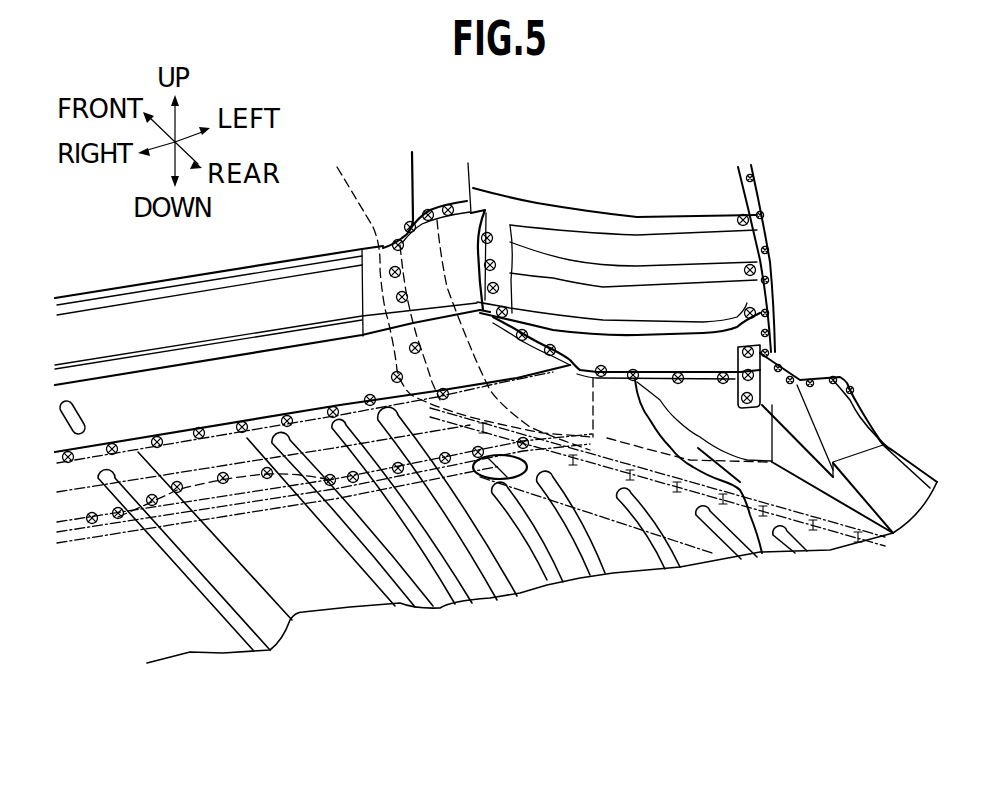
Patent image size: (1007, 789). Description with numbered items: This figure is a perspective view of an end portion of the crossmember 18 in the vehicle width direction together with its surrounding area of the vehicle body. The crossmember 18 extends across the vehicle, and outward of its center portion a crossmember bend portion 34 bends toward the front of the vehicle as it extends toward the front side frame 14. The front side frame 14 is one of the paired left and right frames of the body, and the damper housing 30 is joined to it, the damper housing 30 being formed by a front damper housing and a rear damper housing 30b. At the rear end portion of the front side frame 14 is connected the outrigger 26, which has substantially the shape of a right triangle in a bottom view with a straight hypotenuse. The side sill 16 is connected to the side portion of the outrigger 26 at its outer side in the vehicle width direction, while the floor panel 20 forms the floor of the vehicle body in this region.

The front side frame 14 is at (407, 153).
The side sill 16 is at (901, 451).
The crossmember 18 is at (221, 440).
The floor panel 20 is at (528, 580).
The outrigger 26 is at (758, 550).
The damper housing 30 is at (776, 195).
The rear damper housing 30b is at (710, 250).
The crossmember bend portion 34 is at (390, 242).